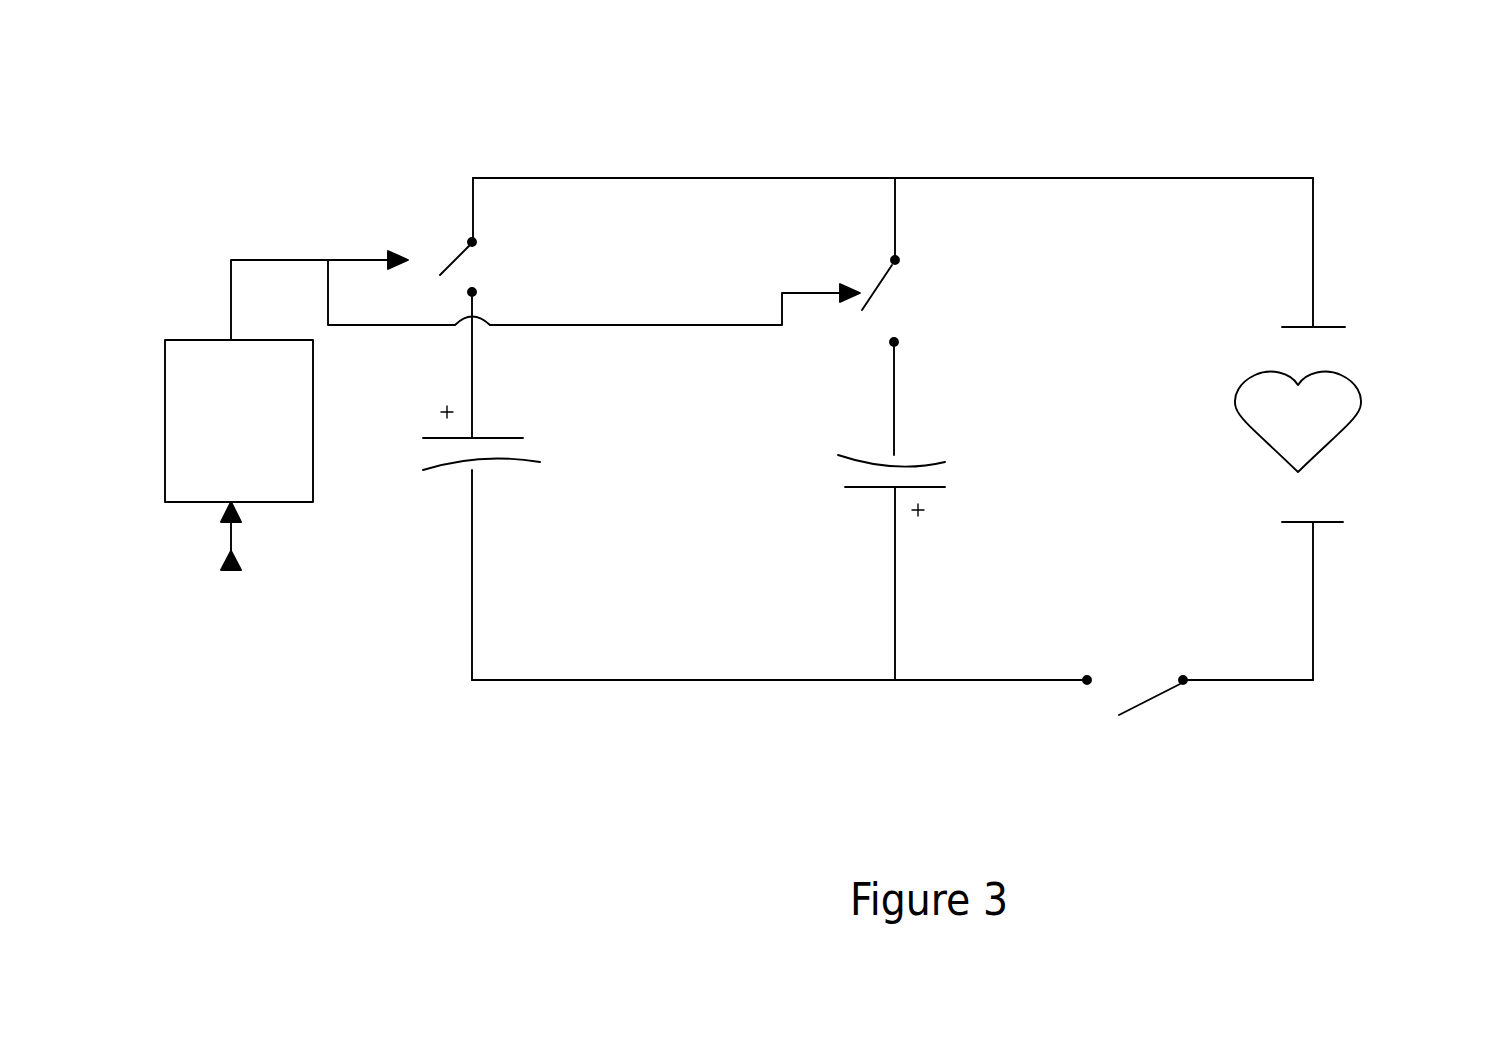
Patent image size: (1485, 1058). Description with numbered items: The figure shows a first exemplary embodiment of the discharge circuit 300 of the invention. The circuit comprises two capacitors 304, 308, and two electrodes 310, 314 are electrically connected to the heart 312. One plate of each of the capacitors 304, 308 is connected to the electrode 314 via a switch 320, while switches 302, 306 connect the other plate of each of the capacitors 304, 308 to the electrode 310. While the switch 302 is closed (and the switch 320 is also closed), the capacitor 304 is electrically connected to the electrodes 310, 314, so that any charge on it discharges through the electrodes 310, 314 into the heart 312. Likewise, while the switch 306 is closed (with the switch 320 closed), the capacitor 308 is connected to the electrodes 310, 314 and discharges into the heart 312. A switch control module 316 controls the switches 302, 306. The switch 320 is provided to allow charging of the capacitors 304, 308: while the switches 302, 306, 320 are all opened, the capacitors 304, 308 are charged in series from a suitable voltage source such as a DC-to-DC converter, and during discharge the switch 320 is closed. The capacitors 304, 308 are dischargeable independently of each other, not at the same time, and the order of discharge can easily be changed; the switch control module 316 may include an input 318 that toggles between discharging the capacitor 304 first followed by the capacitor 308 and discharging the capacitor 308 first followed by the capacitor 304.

The defibrillation circuit 300 is at (457, 146).
The switch 302 is at (461, 258).
The capacitor 304 is at (504, 437).
The switch 306 is at (890, 288).
The capacitor 308 is at (915, 458).
The electrode 310 is at (1333, 325).
The heart 312 is at (1325, 420).
The electrode 314 is at (1325, 523).
The switch control module 316 is at (512, 415).
The input 318 is at (227, 557).
The switch 320 is at (1152, 698).